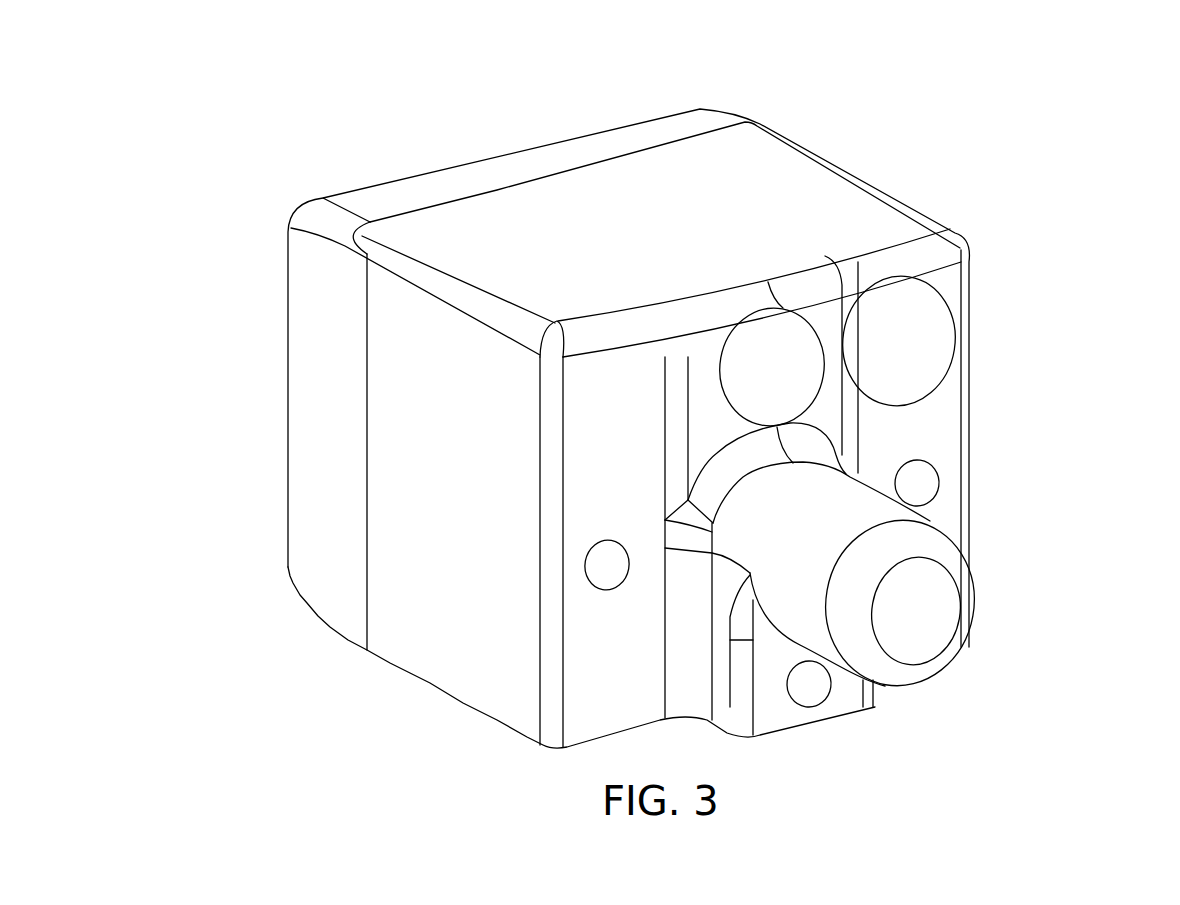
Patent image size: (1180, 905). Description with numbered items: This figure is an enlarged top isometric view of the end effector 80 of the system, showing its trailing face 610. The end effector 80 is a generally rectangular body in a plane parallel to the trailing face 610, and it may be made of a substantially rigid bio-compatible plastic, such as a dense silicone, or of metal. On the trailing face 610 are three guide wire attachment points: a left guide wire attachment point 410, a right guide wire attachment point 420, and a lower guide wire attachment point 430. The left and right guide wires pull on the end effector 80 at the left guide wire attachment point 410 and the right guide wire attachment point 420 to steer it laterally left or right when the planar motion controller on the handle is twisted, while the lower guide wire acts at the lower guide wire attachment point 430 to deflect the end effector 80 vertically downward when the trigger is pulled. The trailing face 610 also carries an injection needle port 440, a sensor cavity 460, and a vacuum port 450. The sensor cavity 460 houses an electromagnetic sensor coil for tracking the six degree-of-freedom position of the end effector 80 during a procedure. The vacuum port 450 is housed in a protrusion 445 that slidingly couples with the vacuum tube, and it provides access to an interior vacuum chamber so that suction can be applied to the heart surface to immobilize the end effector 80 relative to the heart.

The end effector 80 is at (925, 148).
The trailing face 610 is at (593, 417).
The left guide wire attachment point 410 is at (605, 567).
The right guide wire attachment point 420 is at (923, 482).
The lower guide wire attachment point 430 is at (820, 685).
The injection needle port 440 is at (782, 338).
The protrusion 445 is at (932, 545).
The vacuum port 450 is at (932, 597).
The sensor cavity 460 is at (917, 322).